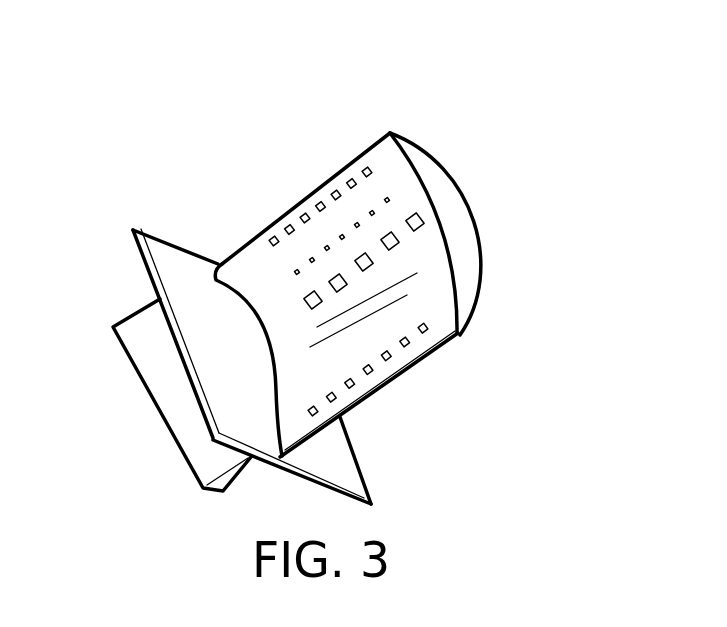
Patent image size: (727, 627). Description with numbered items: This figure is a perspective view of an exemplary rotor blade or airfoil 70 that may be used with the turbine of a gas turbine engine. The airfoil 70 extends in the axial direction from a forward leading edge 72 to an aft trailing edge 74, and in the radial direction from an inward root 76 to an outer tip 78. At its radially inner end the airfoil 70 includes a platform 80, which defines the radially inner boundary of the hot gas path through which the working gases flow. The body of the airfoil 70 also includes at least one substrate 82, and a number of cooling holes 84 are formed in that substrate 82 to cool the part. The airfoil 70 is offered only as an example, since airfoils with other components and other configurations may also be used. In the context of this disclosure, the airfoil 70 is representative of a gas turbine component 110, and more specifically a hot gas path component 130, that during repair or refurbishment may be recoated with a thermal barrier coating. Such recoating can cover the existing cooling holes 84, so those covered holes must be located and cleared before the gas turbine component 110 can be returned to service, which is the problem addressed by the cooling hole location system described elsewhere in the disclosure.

The gas turbine component 110 is at (329, 270).
The hot gas path component 130 is at (327, 101).
The airfoil 70 is at (256, 226).
The leading edge 72 is at (320, 184).
The trailing edge 74 is at (414, 368).
The root 76 is at (188, 458).
The tip 78 is at (455, 163).
The platform 80 is at (366, 474).
The substrate 82 is at (427, 326).
The cooling holes 84 is at (387, 200).